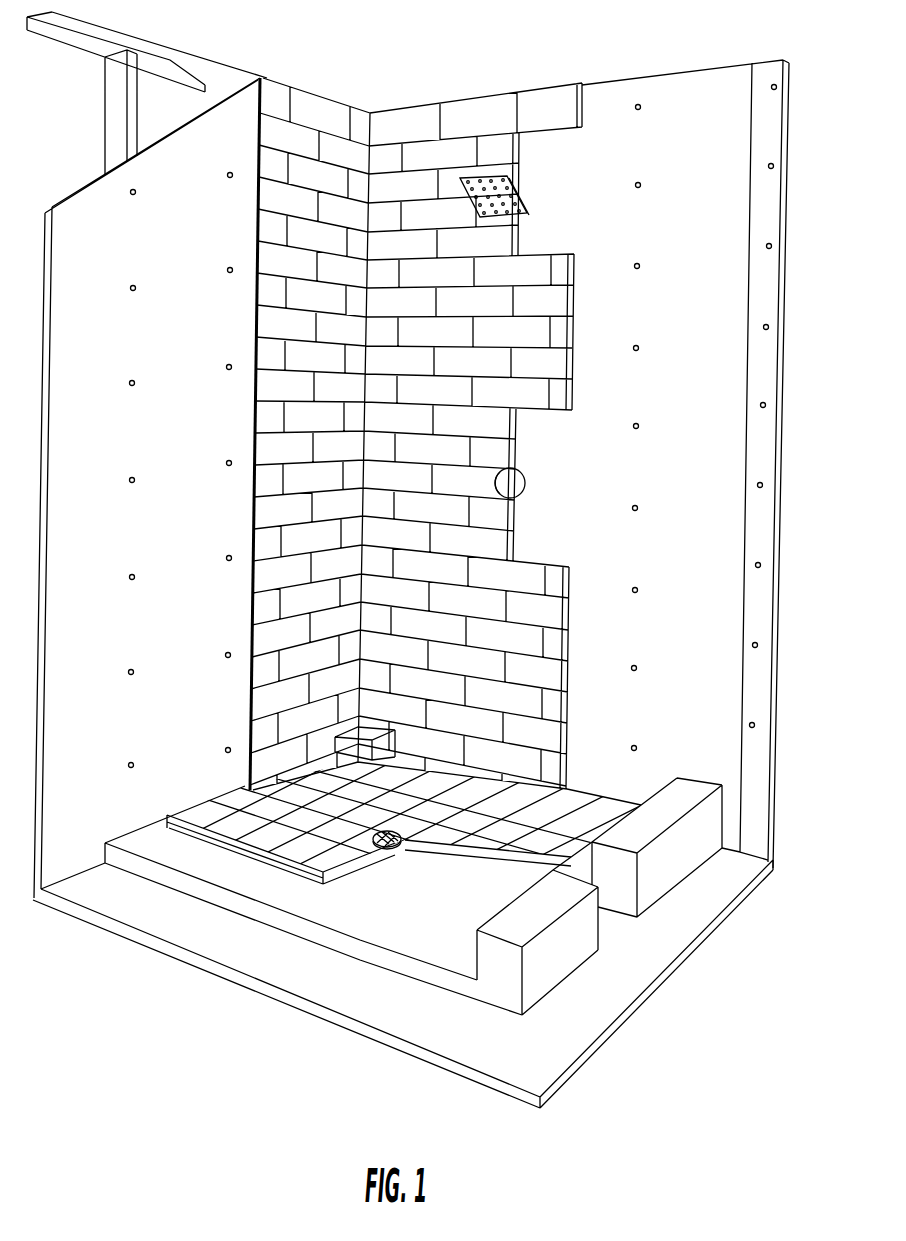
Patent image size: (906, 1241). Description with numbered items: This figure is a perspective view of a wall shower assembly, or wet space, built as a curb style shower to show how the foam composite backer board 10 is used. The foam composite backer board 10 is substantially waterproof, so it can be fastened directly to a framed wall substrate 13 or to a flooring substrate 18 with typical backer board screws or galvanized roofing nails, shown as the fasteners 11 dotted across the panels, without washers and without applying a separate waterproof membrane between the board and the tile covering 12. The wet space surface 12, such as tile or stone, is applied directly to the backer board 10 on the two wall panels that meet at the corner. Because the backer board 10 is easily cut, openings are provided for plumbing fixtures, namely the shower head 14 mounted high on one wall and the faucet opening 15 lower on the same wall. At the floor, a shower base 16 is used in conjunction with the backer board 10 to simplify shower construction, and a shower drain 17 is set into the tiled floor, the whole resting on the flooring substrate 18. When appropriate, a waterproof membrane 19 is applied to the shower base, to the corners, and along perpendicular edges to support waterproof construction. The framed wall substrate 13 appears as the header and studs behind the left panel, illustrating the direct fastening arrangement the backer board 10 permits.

The foam composite backer board 10 is at (208, 358).
The fastener 11 is at (134, 483).
The tile covering 12 is at (267, 423).
The framed wall substrate 13 is at (205, 69).
The shower head 14 is at (518, 183).
The faucet opening 15 is at (522, 480).
The shower base 16 is at (451, 933).
The shower drain 17 is at (384, 852).
The flooring substrate 18 is at (494, 1063).
The waterproof membrane 19 is at (368, 735).